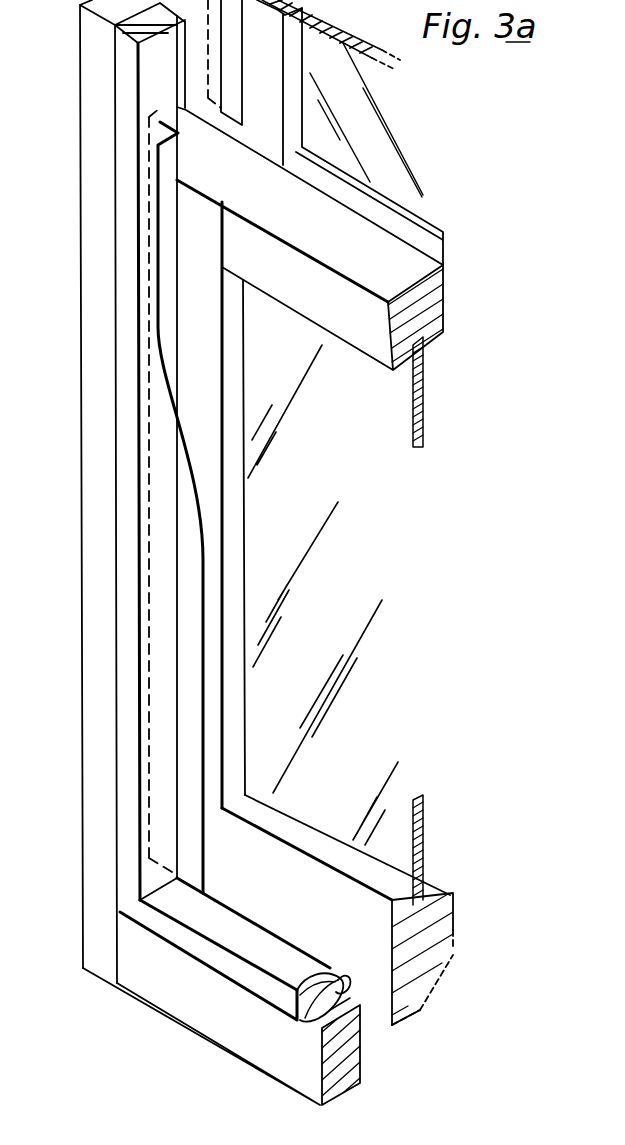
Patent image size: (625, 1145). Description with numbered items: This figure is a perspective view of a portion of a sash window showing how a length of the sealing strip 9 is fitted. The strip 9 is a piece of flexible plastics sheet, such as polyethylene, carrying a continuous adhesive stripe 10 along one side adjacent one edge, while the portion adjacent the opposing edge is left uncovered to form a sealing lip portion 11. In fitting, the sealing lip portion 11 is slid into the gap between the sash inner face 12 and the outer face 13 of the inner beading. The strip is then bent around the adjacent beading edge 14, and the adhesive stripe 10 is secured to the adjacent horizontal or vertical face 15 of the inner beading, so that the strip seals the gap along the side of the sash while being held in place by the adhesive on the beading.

The strip 9 is at (172, 903).
The adhesive stripe 10 is at (197, 840).
The sealing lip portion 11 is at (160, 828).
The sash inner face 12 is at (378, 1005).
The outer face of the inner beading 13 is at (320, 1028).
The beading edge 14 is at (300, 1020).
The horizontal or vertical face of the inner beading 15 is at (233, 942).